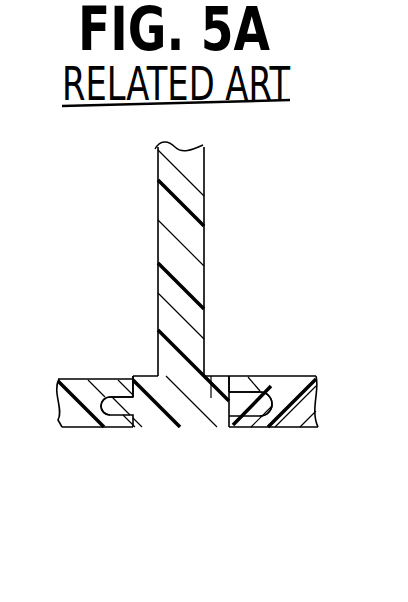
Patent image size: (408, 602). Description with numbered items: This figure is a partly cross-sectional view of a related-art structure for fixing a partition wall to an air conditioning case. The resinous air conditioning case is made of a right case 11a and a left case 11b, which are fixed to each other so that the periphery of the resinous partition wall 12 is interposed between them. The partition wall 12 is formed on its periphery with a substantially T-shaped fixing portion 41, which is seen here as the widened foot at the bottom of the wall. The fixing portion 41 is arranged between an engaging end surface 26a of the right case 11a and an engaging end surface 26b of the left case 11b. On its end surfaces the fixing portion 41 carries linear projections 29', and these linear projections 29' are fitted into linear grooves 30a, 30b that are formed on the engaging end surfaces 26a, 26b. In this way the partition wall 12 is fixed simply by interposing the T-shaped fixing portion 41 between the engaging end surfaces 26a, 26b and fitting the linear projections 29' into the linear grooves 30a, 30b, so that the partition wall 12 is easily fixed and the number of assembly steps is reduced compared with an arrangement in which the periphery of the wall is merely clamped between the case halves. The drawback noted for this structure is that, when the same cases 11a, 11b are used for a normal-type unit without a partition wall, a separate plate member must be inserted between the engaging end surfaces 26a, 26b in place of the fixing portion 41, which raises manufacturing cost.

The partition wall 12 is at (205, 207).
The right case 11a is at (287, 430).
The left case 11b is at (70, 430).
The engaging end surface 26a is at (232, 428).
The engaging end surface 26b is at (132, 430).
The linear groove 30a is at (266, 394).
The linear groove 30b is at (92, 408).
The linear projection 29' is at (184, 350).
The fixing portion 41 is at (220, 378).